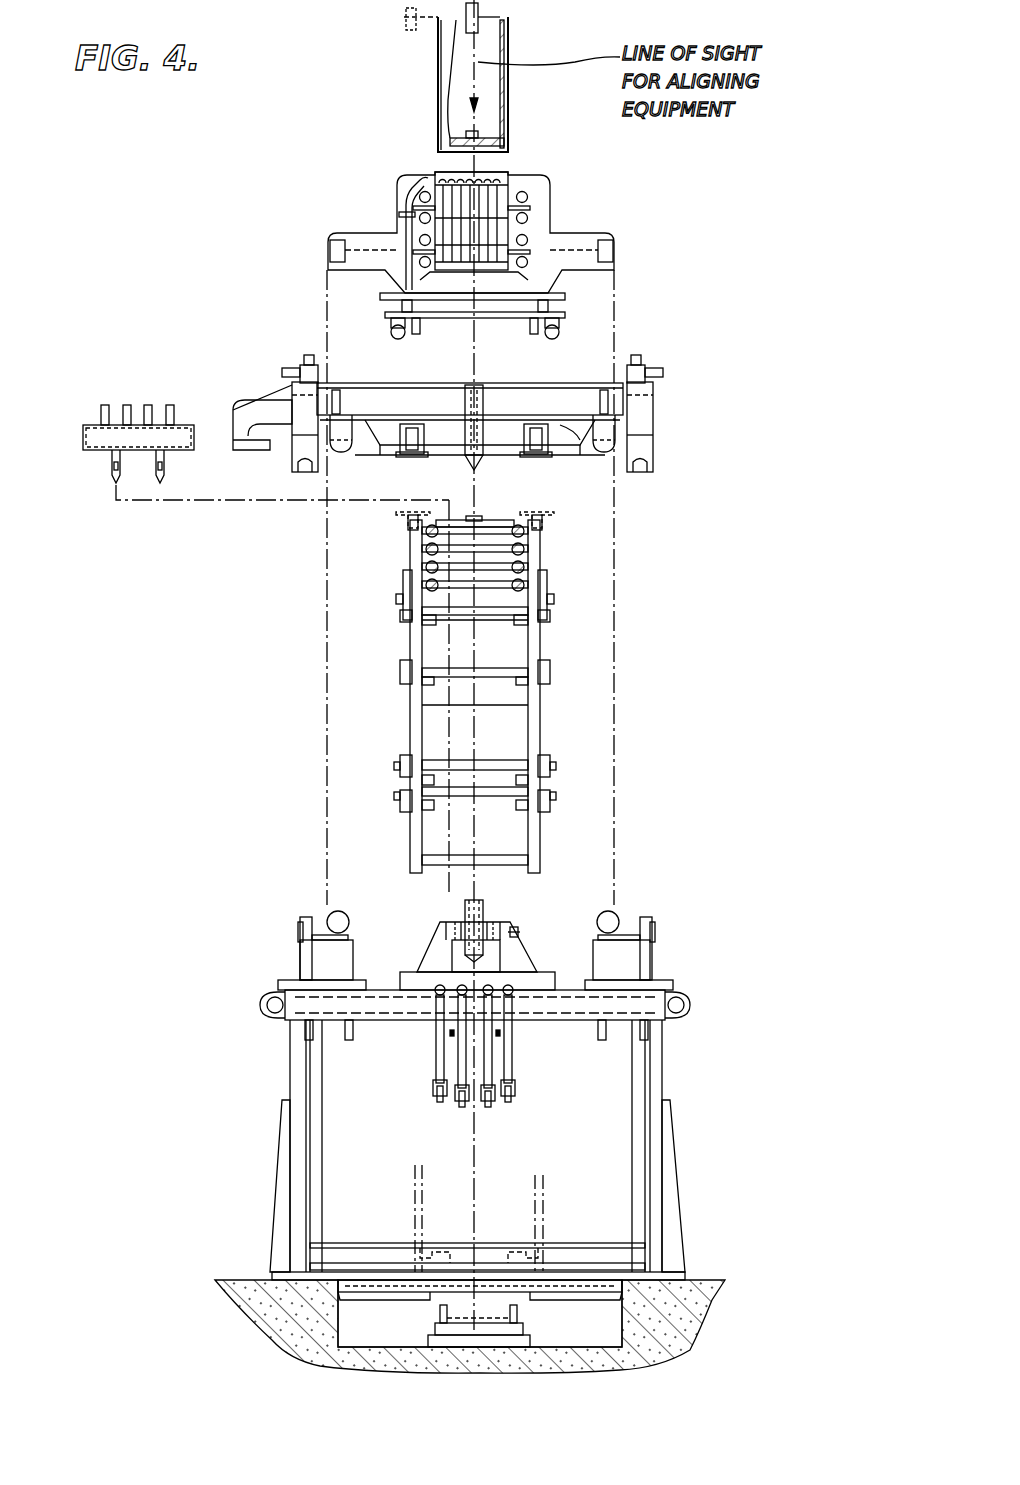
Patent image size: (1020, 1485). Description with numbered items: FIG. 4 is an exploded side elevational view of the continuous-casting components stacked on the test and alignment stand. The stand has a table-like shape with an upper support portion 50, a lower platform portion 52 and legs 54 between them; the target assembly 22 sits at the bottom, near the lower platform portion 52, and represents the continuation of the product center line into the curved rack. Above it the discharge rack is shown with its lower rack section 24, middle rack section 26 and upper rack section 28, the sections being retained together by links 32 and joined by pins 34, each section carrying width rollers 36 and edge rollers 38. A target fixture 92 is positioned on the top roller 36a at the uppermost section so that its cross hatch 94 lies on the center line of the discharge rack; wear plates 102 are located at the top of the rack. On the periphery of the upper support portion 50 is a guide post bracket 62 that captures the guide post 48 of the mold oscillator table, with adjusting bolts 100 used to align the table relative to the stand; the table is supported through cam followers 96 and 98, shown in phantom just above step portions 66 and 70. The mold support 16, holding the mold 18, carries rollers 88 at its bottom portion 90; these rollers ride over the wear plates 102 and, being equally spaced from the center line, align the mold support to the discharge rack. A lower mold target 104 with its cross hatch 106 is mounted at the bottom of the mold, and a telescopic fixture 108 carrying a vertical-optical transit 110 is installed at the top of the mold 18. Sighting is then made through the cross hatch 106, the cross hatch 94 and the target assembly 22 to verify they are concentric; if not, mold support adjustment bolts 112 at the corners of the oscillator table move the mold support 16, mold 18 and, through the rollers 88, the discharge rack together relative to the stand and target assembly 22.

The mold support 16 is at (322, 256).
The mold 18 is at (436, 87).
The target assembly 22 is at (524, 1312).
The lower rack section 24 is at (540, 832).
The middle rack section 26 is at (540, 731).
The upper rack section 28 is at (540, 637).
The links 32 is at (402, 780).
The pins 34 is at (400, 766).
The width rollers 36 is at (540, 677).
The top roller 36a is at (428, 549).
The edge rollers 38 is at (530, 578).
The guide post 48 is at (480, 465).
The upper support portion 50 is at (702, 1001).
The lower platform portion 52 is at (700, 1251).
The legs 54 is at (300, 1126).
The guide post bracket 62 is at (518, 966).
The step portion 66 is at (318, 953).
The step portion 70 is at (628, 955).
The rollers 88 is at (396, 338).
The bottom portion 90 is at (450, 318).
The target fixture 92 is at (490, 522).
The cross hatch 94 is at (478, 516).
The cam follower 96 is at (345, 452).
The cam follower 98 is at (598, 452).
The adjusting bolts 100 is at (518, 930).
The wear plates 102 is at (410, 528).
The lower mold target 104 is at (500, 136).
The cross hatch 106 is at (466, 133).
The telescopic fixture 108 is at (432, 38).
The vertical-optical transit 110 is at (480, 17).
The mold support adjustment bolts 112 is at (298, 364).